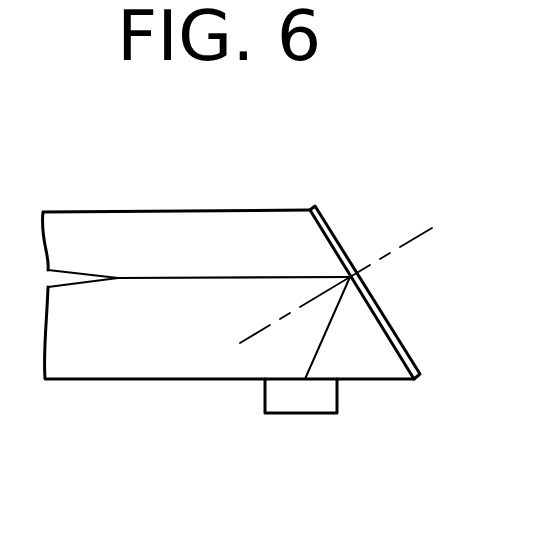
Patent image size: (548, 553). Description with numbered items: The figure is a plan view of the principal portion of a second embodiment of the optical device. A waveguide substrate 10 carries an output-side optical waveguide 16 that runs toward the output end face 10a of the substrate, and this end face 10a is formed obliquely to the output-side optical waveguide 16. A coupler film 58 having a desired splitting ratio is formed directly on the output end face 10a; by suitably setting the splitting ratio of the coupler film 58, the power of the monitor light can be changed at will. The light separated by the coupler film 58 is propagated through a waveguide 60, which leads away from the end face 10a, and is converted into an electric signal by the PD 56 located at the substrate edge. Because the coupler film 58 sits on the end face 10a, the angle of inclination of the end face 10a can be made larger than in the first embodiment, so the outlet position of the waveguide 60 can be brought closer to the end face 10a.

The waveguide substrate 10 is at (123, 218).
The output end face 10a is at (387, 324).
The output-side optical waveguide 16 is at (197, 277).
The coupler film 58 is at (333, 230).
The waveguide 60 is at (326, 336).
The PD 56 is at (293, 402).